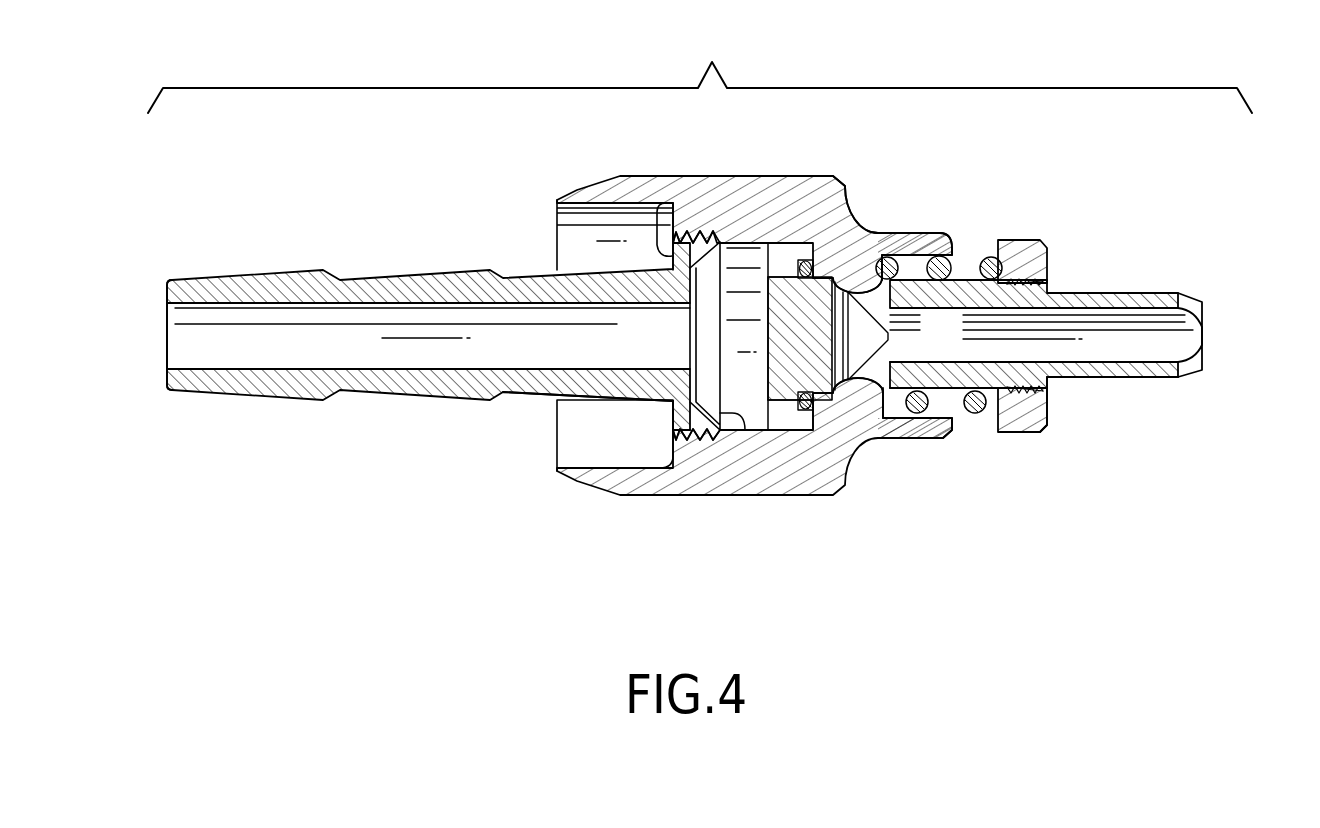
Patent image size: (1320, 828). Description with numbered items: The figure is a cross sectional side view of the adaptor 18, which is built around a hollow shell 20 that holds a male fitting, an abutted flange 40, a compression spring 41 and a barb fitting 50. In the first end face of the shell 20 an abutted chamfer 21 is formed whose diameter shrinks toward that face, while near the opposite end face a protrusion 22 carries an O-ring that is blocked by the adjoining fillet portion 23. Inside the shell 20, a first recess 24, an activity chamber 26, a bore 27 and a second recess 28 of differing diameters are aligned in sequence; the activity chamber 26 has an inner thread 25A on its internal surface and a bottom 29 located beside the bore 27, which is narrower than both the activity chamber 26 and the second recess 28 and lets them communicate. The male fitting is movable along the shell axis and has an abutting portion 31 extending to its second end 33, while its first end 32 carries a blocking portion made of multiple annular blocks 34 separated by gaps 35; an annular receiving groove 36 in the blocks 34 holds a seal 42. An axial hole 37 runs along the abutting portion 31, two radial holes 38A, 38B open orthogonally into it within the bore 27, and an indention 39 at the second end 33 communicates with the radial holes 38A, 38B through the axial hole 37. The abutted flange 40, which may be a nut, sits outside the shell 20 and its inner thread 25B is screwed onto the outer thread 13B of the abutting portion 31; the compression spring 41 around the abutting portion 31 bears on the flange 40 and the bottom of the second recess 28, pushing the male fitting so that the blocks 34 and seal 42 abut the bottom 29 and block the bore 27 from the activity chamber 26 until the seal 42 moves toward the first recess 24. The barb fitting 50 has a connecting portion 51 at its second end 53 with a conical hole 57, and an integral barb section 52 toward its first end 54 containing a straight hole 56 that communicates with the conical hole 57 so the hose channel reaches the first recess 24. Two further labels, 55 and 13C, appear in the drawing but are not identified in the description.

The adaptor 18 is at (700, 71).
The shell 20 is at (737, 190).
The abutted chamfer 21 is at (567, 197).
The protrusion 22 is at (942, 248).
The fillet portion 23 is at (848, 190).
The first recess 24 is at (572, 452).
The inner thread 25A is at (661, 252).
The inner thread 25B is at (1043, 302).
The activity chamber 26 is at (741, 255).
The bore 27 is at (850, 287).
The second recess 28 is at (977, 413).
The bottom 29 is at (810, 422).
The abutting portion 31 is at (1135, 302).
The first end 32 is at (780, 413).
The second end 33 is at (1202, 327).
The blocks 34 is at (790, 248).
The gaps 35 is at (800, 396).
The receiving groove 36 is at (860, 280).
The axial hole 37 is at (1115, 352).
The radial hole 38A is at (920, 411).
The radial hole 38B is at (880, 302).
The indention 39 is at (1190, 307).
The abutted flange 40 is at (1033, 418).
The compression spring 41 is at (941, 267).
The seal 42 is at (895, 337).
The barb fitting 50 is at (722, 555).
The connecting portion 51 is at (697, 434).
The barb section 52 is at (622, 388).
The second end 53 is at (751, 375).
The first end 54 is at (168, 353).
The tube 55 is at (407, 398).
The straight hole 56 is at (258, 312).
The conical hole 57 is at (708, 322).
The outer thread 13B is at (1043, 273).
The internal thread 13C is at (690, 231).